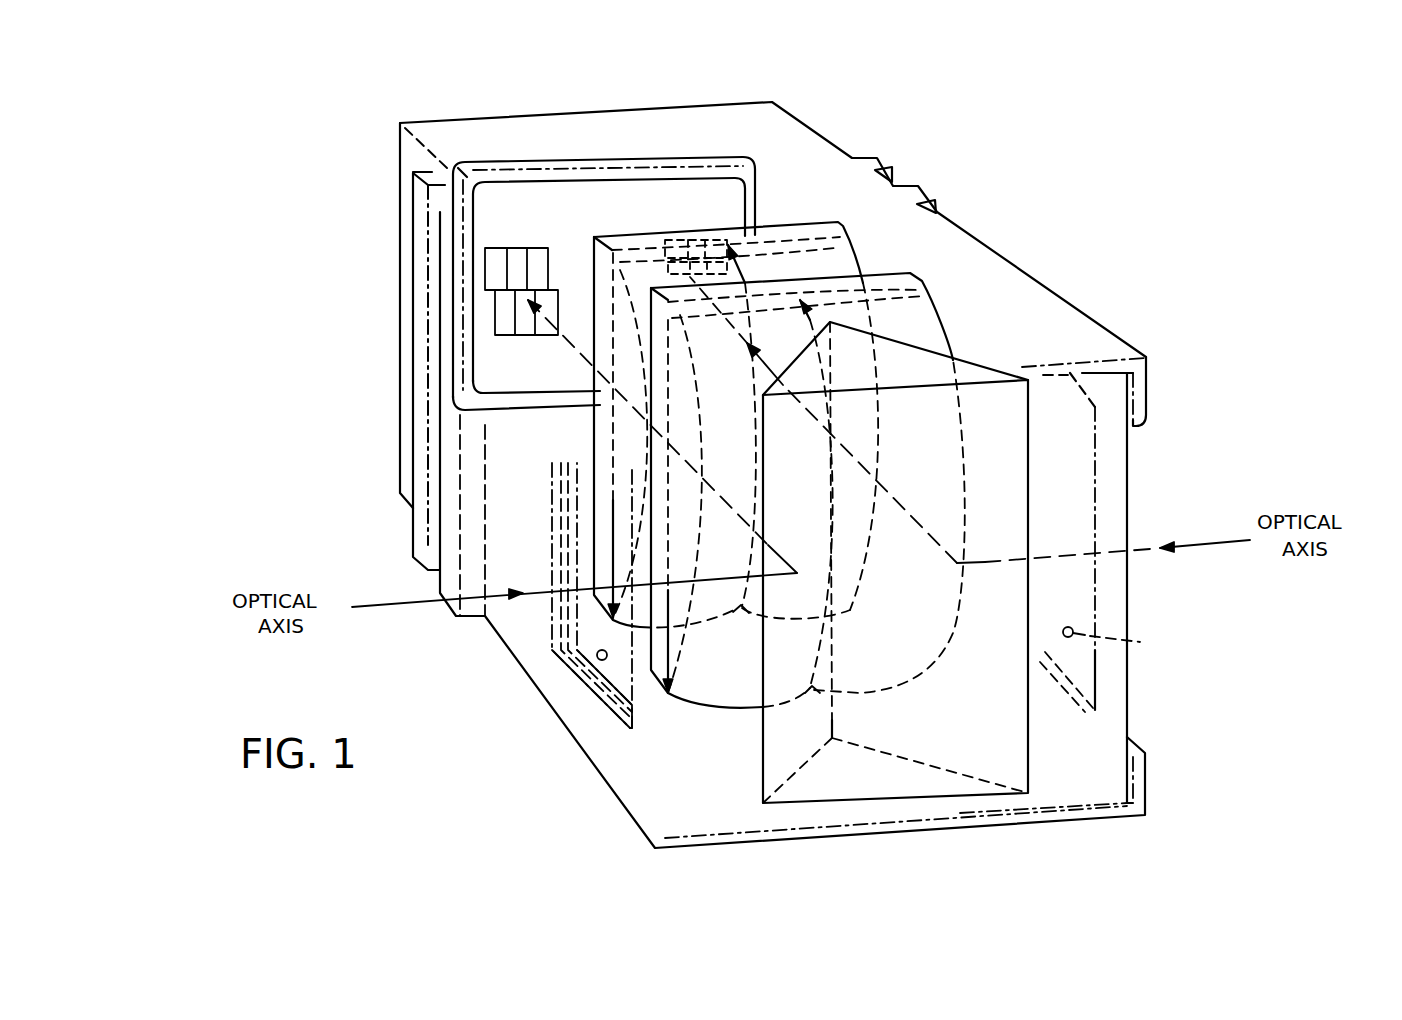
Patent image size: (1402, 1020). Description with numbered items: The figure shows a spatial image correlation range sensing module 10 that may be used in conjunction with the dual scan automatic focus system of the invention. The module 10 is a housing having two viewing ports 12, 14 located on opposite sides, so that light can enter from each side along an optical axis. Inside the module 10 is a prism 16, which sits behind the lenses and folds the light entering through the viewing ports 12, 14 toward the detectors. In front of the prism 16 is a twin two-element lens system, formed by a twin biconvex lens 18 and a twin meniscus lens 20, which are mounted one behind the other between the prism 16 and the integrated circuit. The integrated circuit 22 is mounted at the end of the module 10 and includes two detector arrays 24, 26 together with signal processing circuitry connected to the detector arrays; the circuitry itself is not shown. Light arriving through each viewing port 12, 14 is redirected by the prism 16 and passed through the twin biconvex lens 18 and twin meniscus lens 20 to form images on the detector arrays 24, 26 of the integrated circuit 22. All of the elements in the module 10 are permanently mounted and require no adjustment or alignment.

The module 10 is at (348, 363).
The viewing port 12 is at (1145, 643).
The viewing port 14 is at (598, 660).
The prism 16 is at (980, 365).
The twin biconvex lens 18 is at (918, 275).
The twin meniscus lens 20 is at (842, 220).
The integrated circuit 22 is at (558, 155).
The detector array 24 is at (690, 240).
The detector array 26 is at (503, 247).